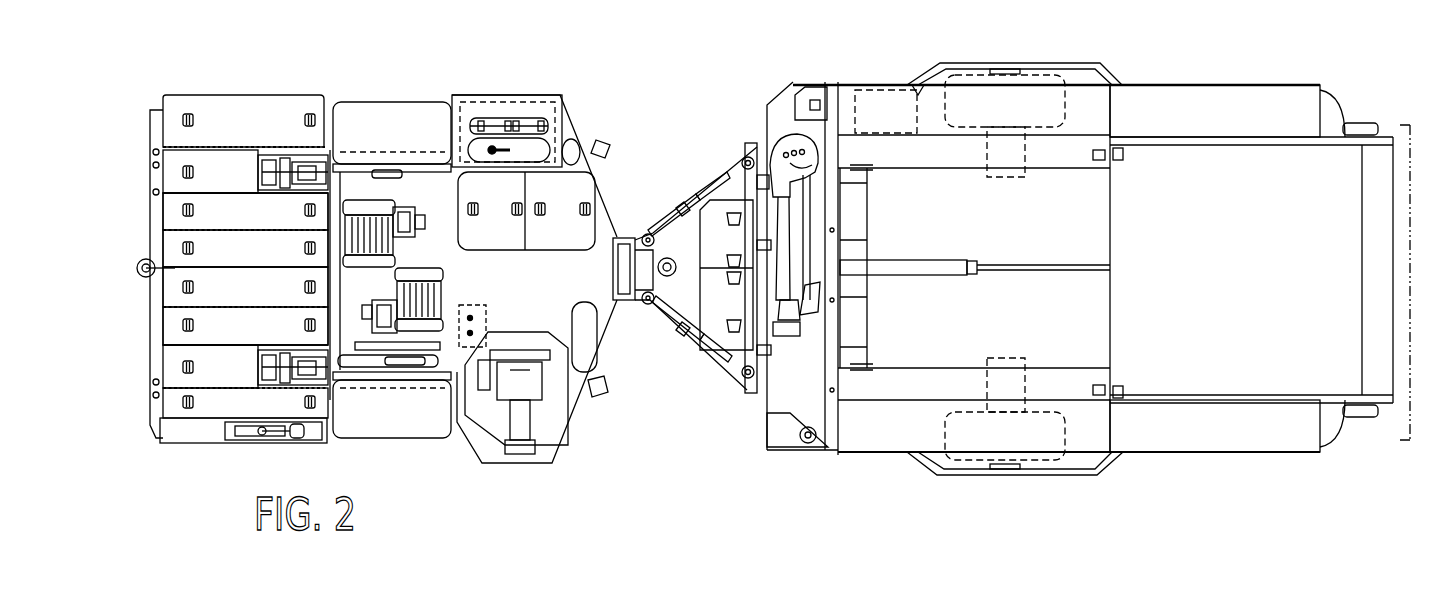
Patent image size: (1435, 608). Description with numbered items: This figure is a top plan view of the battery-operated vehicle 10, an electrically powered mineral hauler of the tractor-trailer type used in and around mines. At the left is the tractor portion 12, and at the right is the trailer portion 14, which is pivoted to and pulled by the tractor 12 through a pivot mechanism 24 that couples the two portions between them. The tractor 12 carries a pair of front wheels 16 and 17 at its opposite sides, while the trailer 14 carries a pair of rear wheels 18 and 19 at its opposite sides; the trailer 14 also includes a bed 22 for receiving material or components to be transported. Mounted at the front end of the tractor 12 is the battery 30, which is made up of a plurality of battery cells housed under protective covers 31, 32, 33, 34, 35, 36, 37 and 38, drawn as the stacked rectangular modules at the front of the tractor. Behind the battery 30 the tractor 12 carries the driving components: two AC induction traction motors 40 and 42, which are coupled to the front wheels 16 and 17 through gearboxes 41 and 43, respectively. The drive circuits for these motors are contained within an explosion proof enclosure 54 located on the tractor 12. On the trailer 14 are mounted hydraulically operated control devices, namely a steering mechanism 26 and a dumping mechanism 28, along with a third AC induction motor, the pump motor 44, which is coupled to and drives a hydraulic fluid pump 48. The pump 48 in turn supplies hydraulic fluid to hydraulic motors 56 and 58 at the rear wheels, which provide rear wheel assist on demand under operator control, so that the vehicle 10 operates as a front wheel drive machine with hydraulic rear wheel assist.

The battery-operated vehicle 10 is at (692, 472).
The tractor portion 12 is at (600, 178).
The trailer portion 14 is at (1300, 90).
The front wheel 16 is at (367, 440).
The front wheel 17 is at (376, 175).
The rear wheel 18 is at (1040, 462).
The rear wheel 19 is at (1045, 75).
The bed 22 is at (1340, 160).
The pivot mechanism 24 is at (668, 278).
The steering mechanism 26 is at (707, 347).
The dumping mechanism 28 is at (792, 217).
The battery 30 is at (243, 147).
The protective cover 31 is at (200, 128).
The protective cover 32 is at (205, 160).
The protective cover 33 is at (168, 213).
The protective cover 34 is at (168, 250).
The protective cover 35 is at (170, 290).
The protective cover 36 is at (170, 330).
The protective cover 37 is at (207, 380).
The protective cover 38 is at (200, 412).
The AC traction motor 40 is at (445, 252).
The gearbox 41 is at (373, 360).
The AC traction motor 42 is at (412, 240).
The gearbox 43 is at (372, 140).
The AC pump motor 44 is at (882, 90).
The hydraulic fluid pump 48 is at (812, 80).
The explosion proof enclosure 54 is at (555, 97).
The hydraulic motor 56 is at (1010, 358).
The hydraulic motor 58 is at (1010, 180).